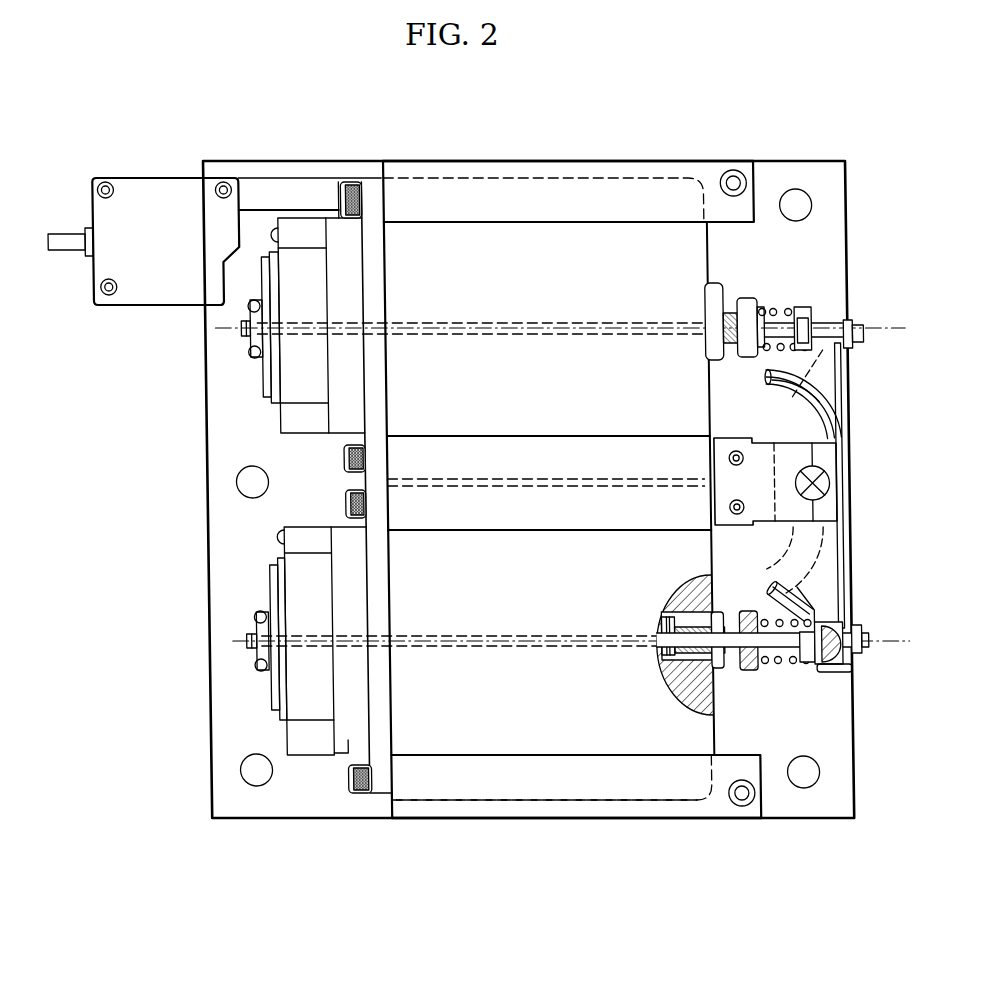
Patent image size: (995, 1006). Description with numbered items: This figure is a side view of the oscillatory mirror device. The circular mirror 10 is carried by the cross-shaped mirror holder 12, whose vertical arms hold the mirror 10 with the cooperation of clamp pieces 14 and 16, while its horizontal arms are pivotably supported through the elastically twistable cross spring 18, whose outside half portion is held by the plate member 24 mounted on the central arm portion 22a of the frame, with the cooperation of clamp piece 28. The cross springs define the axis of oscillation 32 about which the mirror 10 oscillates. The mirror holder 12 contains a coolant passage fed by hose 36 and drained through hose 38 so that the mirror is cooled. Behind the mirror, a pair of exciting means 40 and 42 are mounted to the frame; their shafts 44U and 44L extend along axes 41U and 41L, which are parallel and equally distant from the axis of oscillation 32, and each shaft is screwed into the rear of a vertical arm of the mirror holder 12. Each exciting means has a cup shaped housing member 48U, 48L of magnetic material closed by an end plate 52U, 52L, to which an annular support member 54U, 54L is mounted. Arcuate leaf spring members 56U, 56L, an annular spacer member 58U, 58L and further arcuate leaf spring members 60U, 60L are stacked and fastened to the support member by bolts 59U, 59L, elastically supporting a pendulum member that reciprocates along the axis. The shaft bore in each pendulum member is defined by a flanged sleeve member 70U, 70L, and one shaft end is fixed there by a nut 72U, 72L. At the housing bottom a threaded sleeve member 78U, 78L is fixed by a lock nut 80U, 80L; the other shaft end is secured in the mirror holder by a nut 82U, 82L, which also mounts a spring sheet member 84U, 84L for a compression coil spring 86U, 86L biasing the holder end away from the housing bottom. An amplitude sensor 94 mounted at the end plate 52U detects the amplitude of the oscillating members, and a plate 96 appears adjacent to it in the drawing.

The mirror 10 is at (840, 392).
The mirror holder 12 is at (829, 556).
The clamp piece 14 is at (850, 345).
The clamp piece 16 is at (850, 624).
The cross spring 18 is at (838, 474).
The central arm portion 22a is at (518, 520).
The plate member 24 is at (717, 476).
The clamp piece 28 is at (828, 508).
The axis of oscillation 32 is at (818, 462).
The hose 36 is at (783, 407).
The hose 38 is at (765, 583).
The exciting means 40 is at (434, 236).
The axis 41U is at (464, 330).
The axis 41L is at (433, 638).
The exciting means 42 is at (474, 740).
The shaft 44U is at (776, 322).
The shaft 44L is at (777, 660).
The cup shaped housing member 48U is at (565, 235).
The cup shaped housing member 48L is at (582, 743).
The end plate 52U is at (371, 308).
The end plate 52L is at (375, 680).
The annular support member 54U is at (336, 232).
The annular support member 54L is at (340, 742).
The arcuate leaf spring members 56U is at (324, 432).
The arcuate leaf spring members 56L is at (321, 742).
The annular spacer member 58U is at (291, 225).
The annular spacer member 58L is at (305, 532).
The bolts 59U is at (269, 238).
The bolts 59L is at (272, 538).
The arcuate leaf spring members 60U is at (271, 419).
The arcuate leaf spring members 60L is at (276, 740).
The sleeve member 70U is at (255, 314).
The sleeve member 70L is at (252, 618).
The nut 72U is at (243, 340).
The nut 72L is at (250, 652).
The sleeve member 78U is at (746, 305).
The sleeve member 78L is at (747, 668).
The lock nut 80U is at (708, 292).
The lock nut 80L is at (698, 680).
The nut 82U is at (823, 300).
The nut 82L is at (796, 667).
The spring sheet member 84U is at (764, 386).
The spring sheet member 84L is at (820, 680).
The compression coil spring 86U is at (771, 308).
The compression coil spring 86L is at (770, 664).
The amplitude sensor 94 is at (136, 190).
The mounting plate 96 is at (249, 190).